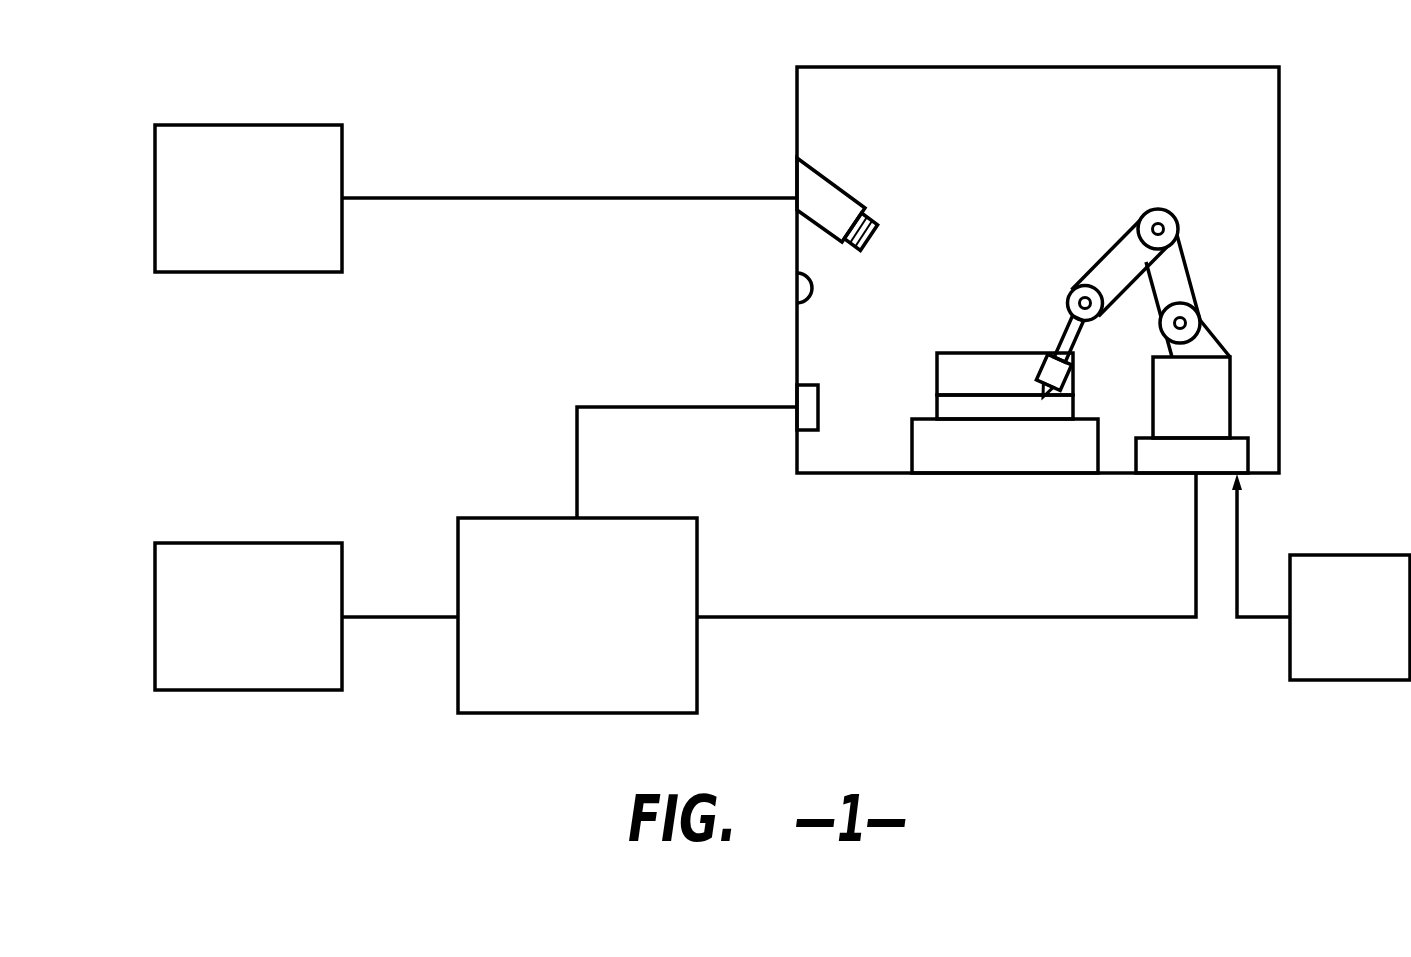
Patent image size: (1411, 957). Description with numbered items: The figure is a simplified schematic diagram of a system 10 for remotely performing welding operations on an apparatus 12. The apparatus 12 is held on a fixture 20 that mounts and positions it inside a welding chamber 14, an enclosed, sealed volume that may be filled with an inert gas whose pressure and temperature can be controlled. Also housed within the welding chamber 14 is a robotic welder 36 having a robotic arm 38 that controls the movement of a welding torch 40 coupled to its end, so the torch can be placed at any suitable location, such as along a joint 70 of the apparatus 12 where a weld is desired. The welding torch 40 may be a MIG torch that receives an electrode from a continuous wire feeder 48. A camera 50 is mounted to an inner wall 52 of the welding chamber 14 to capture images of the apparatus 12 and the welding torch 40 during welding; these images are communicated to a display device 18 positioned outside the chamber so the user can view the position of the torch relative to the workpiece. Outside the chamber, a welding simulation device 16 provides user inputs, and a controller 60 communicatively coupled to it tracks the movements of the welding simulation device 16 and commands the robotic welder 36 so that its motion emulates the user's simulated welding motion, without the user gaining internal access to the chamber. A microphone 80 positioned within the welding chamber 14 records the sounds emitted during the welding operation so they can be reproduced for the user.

The system 10 is at (520, 108).
The apparatus 12 is at (966, 342).
The welding chamber 14 is at (1125, 60).
The welding simulation device 16 is at (224, 632).
The display device 18 is at (228, 213).
The fixture 20 is at (912, 445).
The robotic welder 36 is at (1131, 307).
The robotic arm 38 is at (1187, 268).
The welding torch 40 is at (1060, 333).
The continuous wire feeder 48 is at (1334, 638).
The camera 50 is at (823, 175).
The inner wall 52 is at (797, 310).
The controller 60 is at (559, 635).
The joint 70 is at (953, 395).
The microphone 80 is at (807, 432).